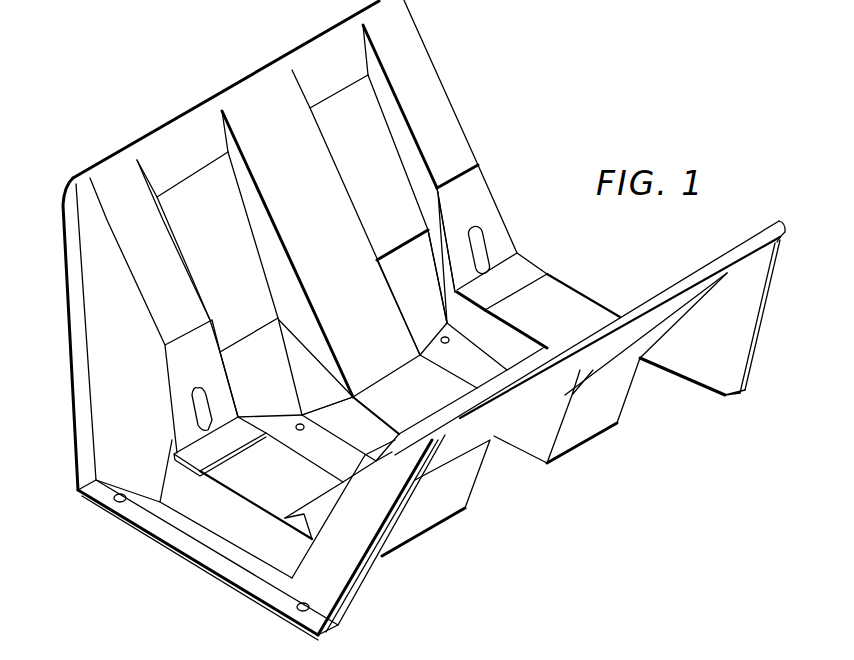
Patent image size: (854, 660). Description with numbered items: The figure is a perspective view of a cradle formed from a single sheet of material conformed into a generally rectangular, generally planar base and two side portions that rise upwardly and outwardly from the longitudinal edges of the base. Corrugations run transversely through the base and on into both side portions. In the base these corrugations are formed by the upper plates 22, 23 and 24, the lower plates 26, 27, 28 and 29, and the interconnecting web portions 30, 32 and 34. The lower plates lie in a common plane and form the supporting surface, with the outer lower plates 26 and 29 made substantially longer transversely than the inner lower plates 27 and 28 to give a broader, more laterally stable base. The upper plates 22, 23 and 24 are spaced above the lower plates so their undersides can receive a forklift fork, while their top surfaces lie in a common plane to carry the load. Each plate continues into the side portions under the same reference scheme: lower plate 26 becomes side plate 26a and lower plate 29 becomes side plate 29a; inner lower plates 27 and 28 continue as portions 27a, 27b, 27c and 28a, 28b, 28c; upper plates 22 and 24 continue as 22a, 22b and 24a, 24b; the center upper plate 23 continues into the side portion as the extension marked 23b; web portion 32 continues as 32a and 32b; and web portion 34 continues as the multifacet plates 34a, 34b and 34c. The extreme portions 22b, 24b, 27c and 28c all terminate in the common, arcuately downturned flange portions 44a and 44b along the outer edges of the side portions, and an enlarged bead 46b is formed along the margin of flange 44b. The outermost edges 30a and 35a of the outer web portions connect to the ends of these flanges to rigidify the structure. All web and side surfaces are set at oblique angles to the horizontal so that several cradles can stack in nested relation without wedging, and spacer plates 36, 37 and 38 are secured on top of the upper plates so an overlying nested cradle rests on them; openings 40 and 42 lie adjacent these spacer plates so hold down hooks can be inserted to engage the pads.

The upper plate 22 is at (271, 486).
The continuation of upper plate 22a is at (201, 386).
The extreme portion of upper plate 22b is at (159, 248).
The center upper plate 23 is at (415, 394).
The back panel 23b is at (356, 212).
The upper plate 24 is at (516, 323).
The continuation of upper plate 24a is at (478, 190).
The extreme portion of upper plate 24b is at (443, 103).
The outer lower plate 26 is at (183, 540).
The side plate 26a is at (78, 452).
The inner lower plate 27 is at (315, 448).
The continuation of lower plate 27a is at (440, 543).
The continuation of lower plate 27b is at (500, 462).
The extreme portion of lower plate 27c is at (178, 145).
The inner lower plate 28 is at (472, 355).
The continuation of lower plate 28a is at (630, 422).
The continuation of lower plate 28b is at (665, 350).
The extreme portion of lower plate 28c is at (323, 50).
The outer lower plate 29 is at (553, 278).
The side plate 29a is at (755, 352).
The outer web portion 30 is at (226, 540).
The outermost edge of web portion 30a is at (245, 505).
The web portion 32 is at (350, 429).
The continuation of web portion 32a is at (322, 375).
The continuation of web portion 32b is at (262, 212).
The web portion 34 is at (510, 351).
The multifacet plate 34a is at (448, 320).
The multifacet plate 34b is at (440, 225).
The multifacet plate 34c is at (385, 95).
The outermost edge of web portion 35a is at (718, 380).
The spacer plate 36 is at (197, 462).
The spacer plate 37 is at (290, 520).
The spacer plate 38 is at (525, 268).
The opening 40 is at (196, 410).
The opening 42 is at (490, 240).
The arcuately downturned flange portion 44a is at (241, 80).
The arcuately downturned flange portion 44b is at (775, 222).
The enlarged bead 46b is at (781, 240).